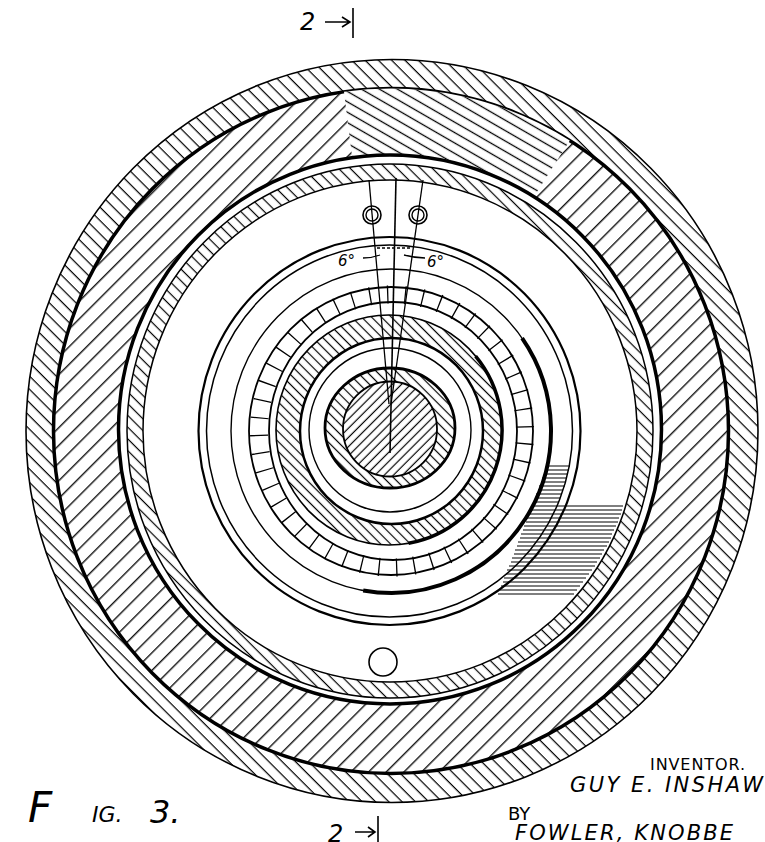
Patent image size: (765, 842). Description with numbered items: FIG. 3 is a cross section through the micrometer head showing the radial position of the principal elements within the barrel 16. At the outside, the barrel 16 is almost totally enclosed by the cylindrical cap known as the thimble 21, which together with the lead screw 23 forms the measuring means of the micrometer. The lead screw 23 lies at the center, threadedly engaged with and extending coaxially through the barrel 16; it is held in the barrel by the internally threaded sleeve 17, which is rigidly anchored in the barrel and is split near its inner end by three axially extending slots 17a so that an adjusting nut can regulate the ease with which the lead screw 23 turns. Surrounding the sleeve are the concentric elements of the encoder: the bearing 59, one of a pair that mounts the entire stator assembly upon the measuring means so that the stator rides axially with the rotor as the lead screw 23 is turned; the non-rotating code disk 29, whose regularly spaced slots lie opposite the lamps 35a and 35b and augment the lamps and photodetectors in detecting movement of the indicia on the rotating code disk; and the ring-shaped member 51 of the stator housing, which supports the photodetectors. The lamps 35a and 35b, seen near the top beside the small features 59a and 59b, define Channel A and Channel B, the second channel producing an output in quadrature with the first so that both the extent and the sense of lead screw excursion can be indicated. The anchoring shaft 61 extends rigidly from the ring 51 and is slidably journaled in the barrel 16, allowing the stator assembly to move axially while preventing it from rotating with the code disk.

The thimble 21 is at (532, 90).
The barrel 16 is at (588, 158).
The third ring-shaped member 51 is at (240, 279).
The bearing 59 is at (272, 340).
The non-rotating code disk 29 is at (326, 356).
The internally threaded sleeve 17 is at (343, 473).
The axially extending slots 17a is at (436, 382).
The lead screw 23 is at (433, 418).
The lamp 35a is at (367, 221).
The lamp 35b is at (432, 222).
The hole 59a is at (366, 208).
The hole 59b is at (428, 213).
The anchoring shaft 61 is at (398, 660).